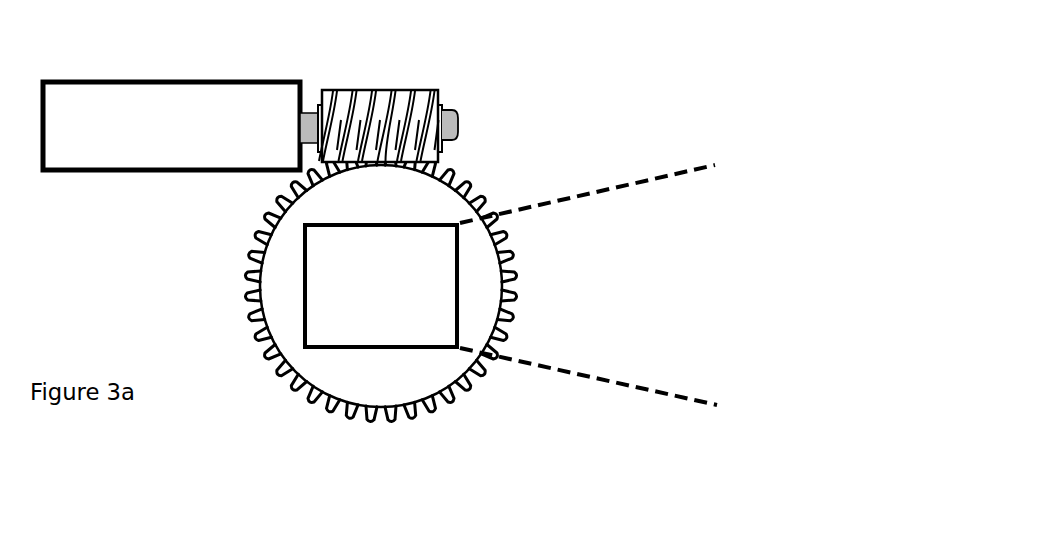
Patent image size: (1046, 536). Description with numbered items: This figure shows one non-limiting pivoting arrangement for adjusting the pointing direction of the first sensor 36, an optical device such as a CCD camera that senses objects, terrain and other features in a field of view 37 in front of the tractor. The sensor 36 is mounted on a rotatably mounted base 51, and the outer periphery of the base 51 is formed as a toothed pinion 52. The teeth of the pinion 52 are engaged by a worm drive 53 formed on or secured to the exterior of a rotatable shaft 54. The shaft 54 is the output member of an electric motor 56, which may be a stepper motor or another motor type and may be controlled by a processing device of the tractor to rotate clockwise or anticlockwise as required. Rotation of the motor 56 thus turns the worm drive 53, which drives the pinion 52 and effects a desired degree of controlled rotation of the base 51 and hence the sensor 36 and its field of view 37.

The first sensor 36 is at (335, 325).
The field of view 37 is at (593, 343).
The rotatably mounted base 51 is at (377, 382).
The toothed pinion 52 is at (430, 397).
The worm drive 53 is at (362, 97).
The rotatable shaft 54 is at (447, 112).
The electric motor 56 is at (243, 100).